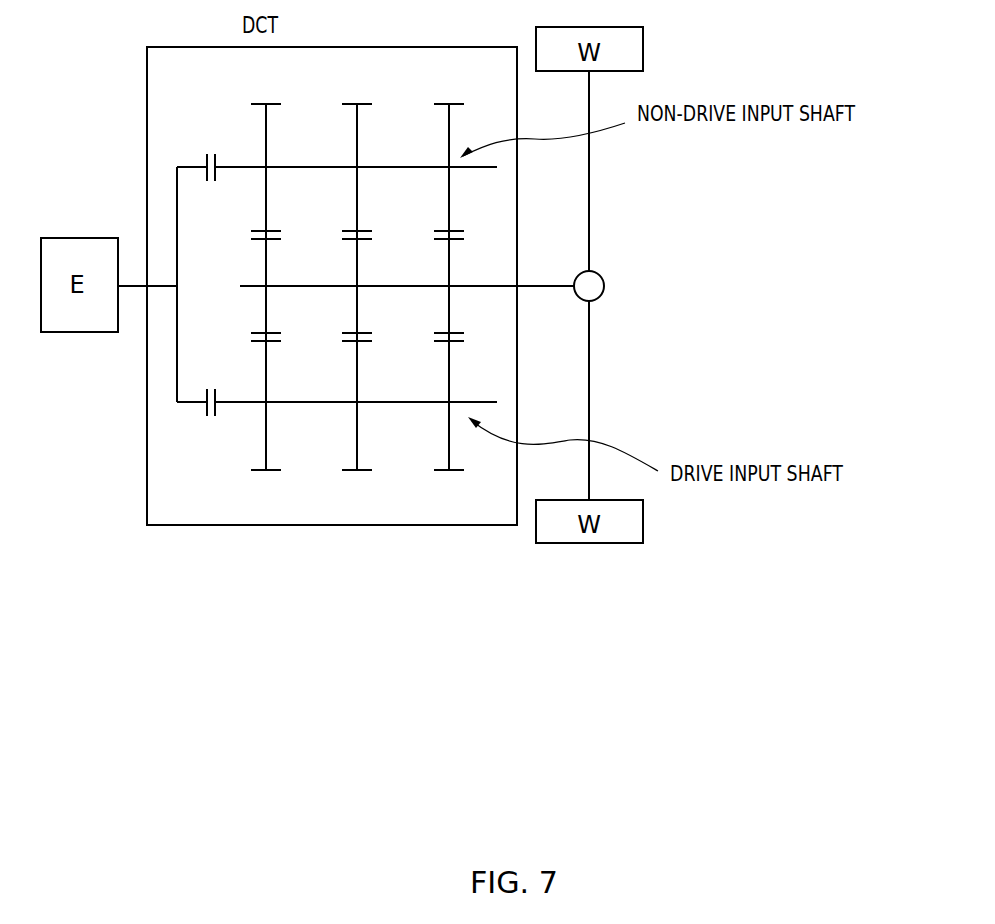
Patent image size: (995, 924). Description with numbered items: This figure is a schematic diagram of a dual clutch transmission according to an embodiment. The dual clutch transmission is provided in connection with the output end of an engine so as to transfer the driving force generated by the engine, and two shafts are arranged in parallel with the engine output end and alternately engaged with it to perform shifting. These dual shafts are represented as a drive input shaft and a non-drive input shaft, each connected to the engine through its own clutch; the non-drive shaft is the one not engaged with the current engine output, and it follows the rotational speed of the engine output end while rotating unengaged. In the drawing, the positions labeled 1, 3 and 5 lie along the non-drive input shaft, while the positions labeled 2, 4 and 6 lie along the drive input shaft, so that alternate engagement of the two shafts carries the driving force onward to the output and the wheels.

The first gear stage (non-drive input shaft) 1 is at (449, 182).
The second gear stage (drive input shaft) 2 is at (449, 392).
The third gear stage (non-drive input shaft) 3 is at (357, 182).
The fourth gear stage (drive input shaft) 4 is at (357, 392).
The fifth gear stage (non-drive input shaft) 5 is at (266, 182).
The sixth gear stage (drive input shaft) 6 is at (266, 392).